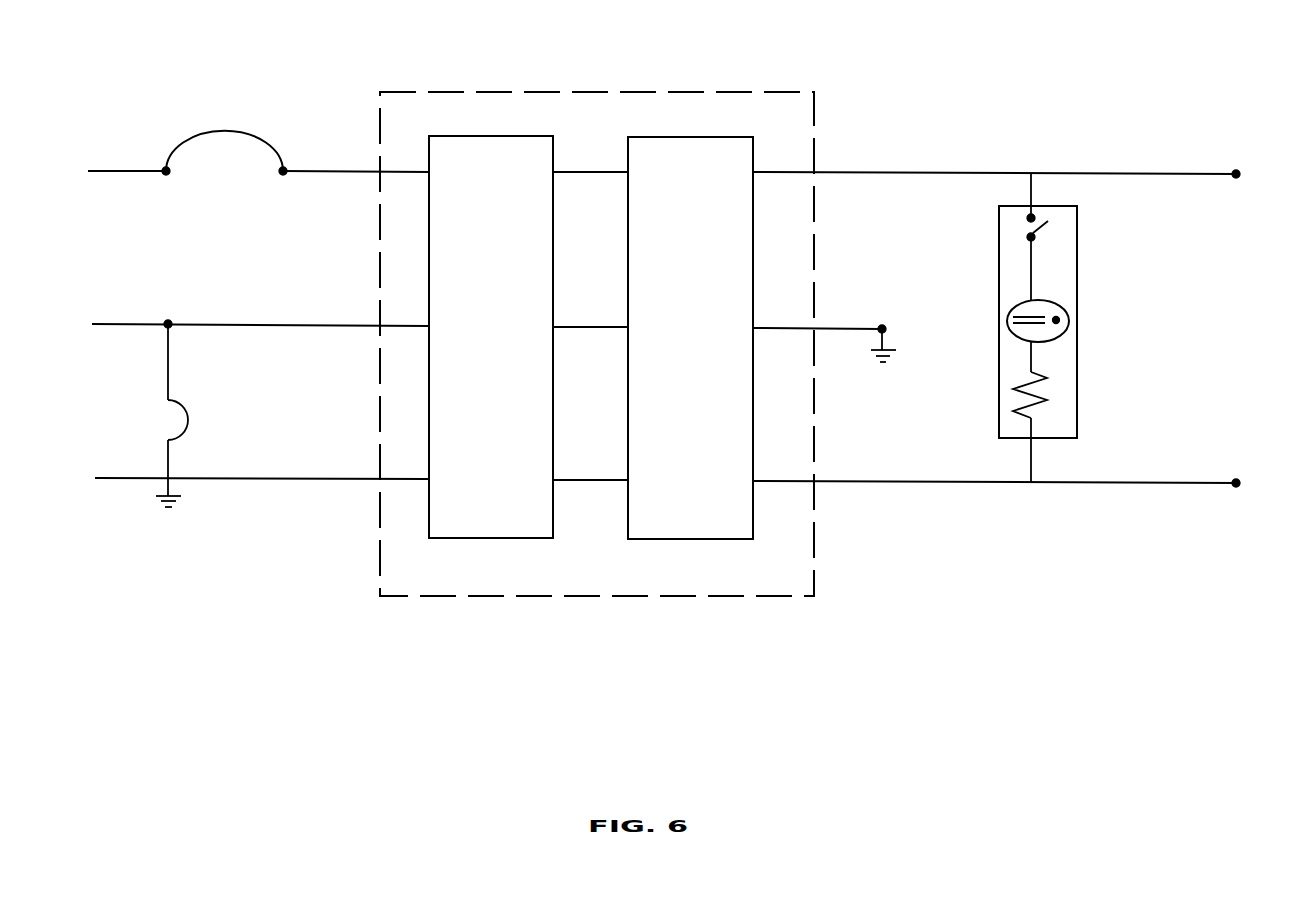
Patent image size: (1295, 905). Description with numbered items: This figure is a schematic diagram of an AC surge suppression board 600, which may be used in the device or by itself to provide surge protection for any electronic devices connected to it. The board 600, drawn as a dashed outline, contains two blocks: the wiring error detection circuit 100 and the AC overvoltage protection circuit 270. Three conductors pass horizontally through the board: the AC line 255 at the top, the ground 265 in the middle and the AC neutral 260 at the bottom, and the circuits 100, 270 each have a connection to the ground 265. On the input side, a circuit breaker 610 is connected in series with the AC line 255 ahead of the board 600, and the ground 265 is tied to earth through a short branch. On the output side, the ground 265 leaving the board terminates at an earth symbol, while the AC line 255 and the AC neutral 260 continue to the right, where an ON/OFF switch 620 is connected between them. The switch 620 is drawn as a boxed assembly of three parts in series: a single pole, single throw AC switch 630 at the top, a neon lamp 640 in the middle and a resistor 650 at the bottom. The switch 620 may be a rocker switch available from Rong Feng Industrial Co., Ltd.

The AC line 255 is at (665, 174).
The ground 265 is at (491, 411).
The AC neutral 260 is at (668, 481).
The circuit breaker 610 is at (217, 141).
The AC surge suppression board 600 is at (630, 93).
The wiring error detection circuit 100 is at (491, 337).
The AC overvoltage protection circuit 270 is at (690, 338).
The ON/OFF switch 620 is at (1077, 250).
The single pole, single throw AC switch 630 is at (1038, 228).
The neon lamp 640 is at (1043, 302).
The resistor 650 is at (1047, 397).